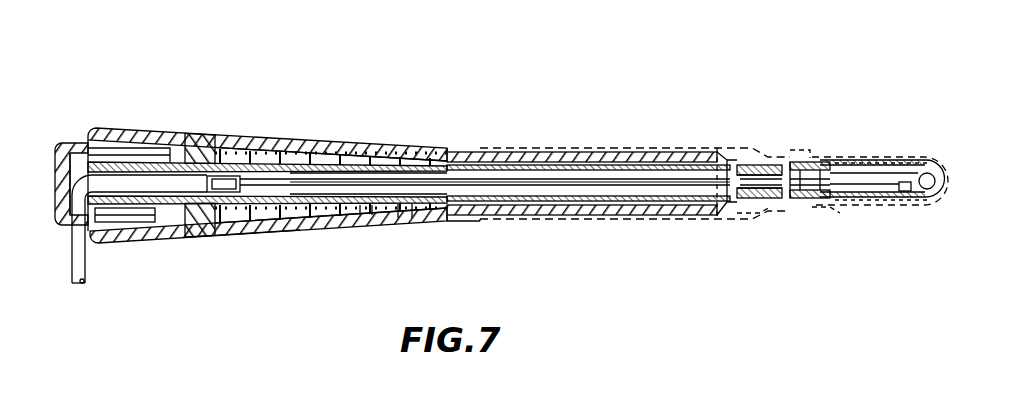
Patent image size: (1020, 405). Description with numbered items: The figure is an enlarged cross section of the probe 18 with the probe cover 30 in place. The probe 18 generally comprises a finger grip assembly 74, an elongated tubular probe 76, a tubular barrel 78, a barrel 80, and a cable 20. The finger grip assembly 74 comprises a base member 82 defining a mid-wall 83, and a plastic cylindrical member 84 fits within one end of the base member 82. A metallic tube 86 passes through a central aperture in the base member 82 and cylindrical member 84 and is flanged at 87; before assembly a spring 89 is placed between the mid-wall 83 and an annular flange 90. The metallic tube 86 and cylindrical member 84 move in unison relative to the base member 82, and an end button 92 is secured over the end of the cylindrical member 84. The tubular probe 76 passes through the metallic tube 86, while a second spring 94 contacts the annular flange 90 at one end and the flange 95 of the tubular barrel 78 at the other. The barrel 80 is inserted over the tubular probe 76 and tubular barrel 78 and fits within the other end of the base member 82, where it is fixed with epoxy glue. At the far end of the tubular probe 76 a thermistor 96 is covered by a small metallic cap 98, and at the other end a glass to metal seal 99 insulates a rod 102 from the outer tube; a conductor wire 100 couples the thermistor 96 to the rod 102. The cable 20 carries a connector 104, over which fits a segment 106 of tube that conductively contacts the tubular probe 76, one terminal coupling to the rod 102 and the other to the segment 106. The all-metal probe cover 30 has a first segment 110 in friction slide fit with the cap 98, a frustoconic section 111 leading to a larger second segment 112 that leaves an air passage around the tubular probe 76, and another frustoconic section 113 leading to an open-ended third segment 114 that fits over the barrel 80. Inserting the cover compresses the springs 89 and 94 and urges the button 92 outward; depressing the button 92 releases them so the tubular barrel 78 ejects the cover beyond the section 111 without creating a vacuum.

The finger grip assembly 74 is at (150, 113).
The cylindrical member 84 is at (82, 141).
The base member 82 is at (118, 129).
The mid-wall 83 is at (195, 149).
The segment of tube 106 is at (242, 150).
The connector 104 is at (264, 152).
The rod 102 is at (289, 151).
The annular flange 90 is at (292, 153).
The barrel 80 is at (393, 148).
The glass to metal seal 99 is at (418, 150).
The third segment 114 is at (568, 146).
The tubular barrel 78 is at (728, 150).
The probe cover 30 is at (792, 153).
The conductor wire 100 is at (796, 160).
The second segment 112 is at (840, 157).
The first segment 110 is at (890, 155).
The metallic cap 98 is at (920, 162).
The thermistor 96 is at (910, 187).
The frustoconic section 111 is at (852, 207).
The elongated tubular probe 76 is at (795, 203).
The frustoconic section 113 is at (777, 217).
The probe 18 is at (485, 224).
The flange 95 is at (405, 219).
The second spring 94 is at (367, 216).
The spring 89 is at (250, 236).
The metallic tube 86 is at (186, 240).
The flange 87 is at (140, 214).
The end button 92 is at (64, 226).
The cable 20 is at (67, 278).